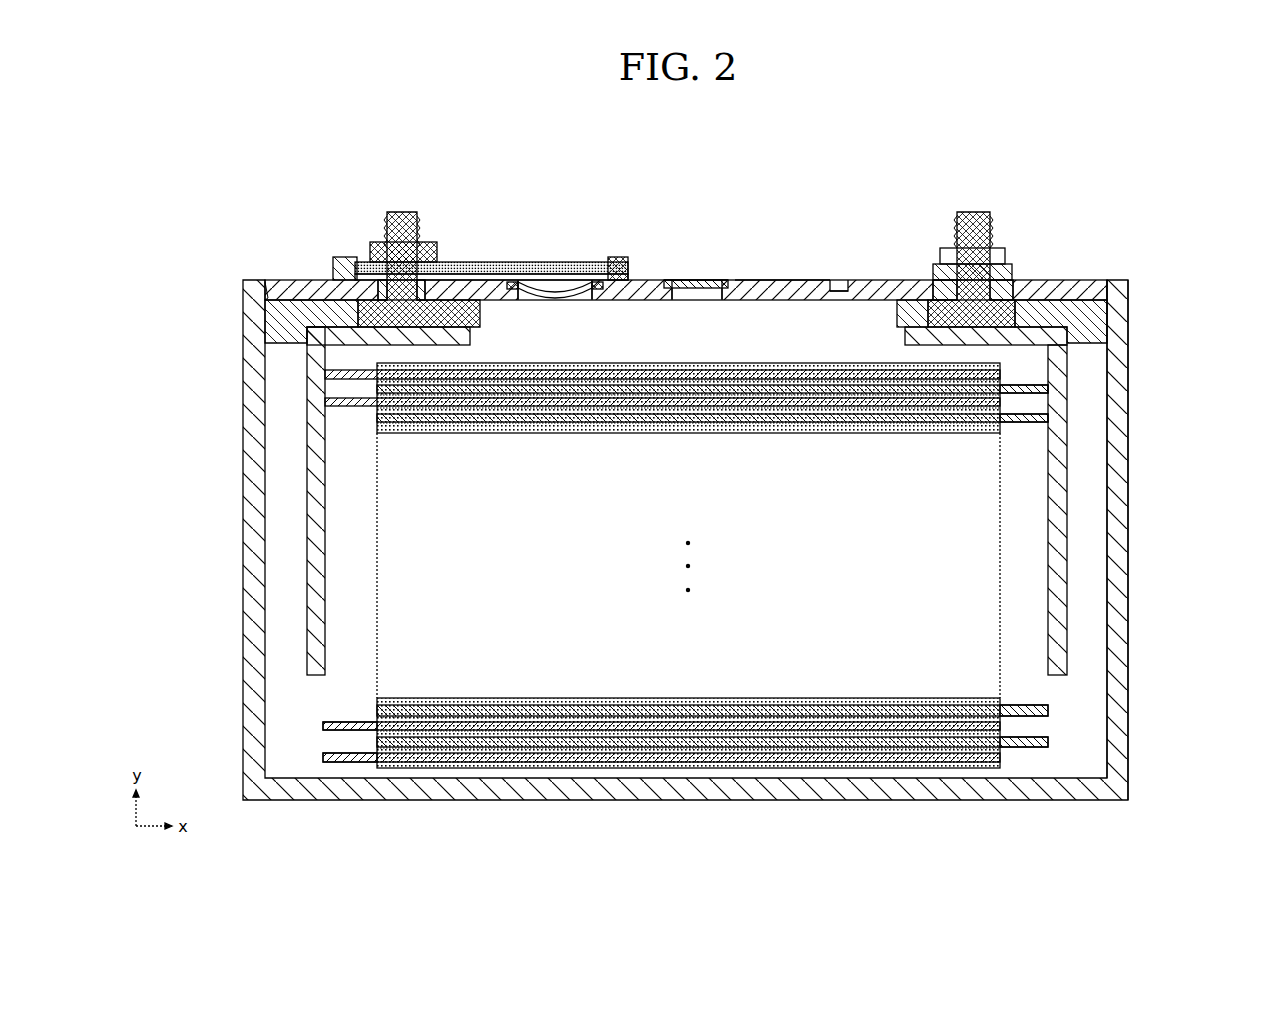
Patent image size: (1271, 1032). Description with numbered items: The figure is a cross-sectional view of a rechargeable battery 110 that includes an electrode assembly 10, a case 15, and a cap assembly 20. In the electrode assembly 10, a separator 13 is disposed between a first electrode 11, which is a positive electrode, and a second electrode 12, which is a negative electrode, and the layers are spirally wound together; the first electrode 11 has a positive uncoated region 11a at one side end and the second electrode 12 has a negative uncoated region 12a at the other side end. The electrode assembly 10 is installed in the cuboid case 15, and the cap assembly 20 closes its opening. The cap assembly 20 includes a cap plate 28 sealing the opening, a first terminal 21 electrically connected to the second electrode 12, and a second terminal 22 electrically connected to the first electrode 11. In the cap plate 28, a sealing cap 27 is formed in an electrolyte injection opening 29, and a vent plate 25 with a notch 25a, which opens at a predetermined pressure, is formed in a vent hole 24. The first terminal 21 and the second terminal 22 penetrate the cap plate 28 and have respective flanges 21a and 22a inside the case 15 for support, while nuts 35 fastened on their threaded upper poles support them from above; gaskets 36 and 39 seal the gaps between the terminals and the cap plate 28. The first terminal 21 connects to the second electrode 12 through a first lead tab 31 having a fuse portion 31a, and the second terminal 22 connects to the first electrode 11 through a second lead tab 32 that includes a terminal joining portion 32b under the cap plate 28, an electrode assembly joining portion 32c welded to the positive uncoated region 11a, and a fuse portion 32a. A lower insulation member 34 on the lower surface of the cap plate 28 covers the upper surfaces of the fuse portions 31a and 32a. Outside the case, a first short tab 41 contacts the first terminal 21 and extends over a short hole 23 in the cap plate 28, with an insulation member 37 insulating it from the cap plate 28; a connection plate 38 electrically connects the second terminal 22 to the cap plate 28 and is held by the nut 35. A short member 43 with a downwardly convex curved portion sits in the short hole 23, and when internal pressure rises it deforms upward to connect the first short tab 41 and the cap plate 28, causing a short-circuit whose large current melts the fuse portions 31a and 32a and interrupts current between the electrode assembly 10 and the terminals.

The rechargeable battery 110 is at (814, 167).
The electrode assembly 10 is at (790, 776).
The case 15 is at (1118, 483).
The lower insulation member 34 is at (262, 326).
The cap assembly 20 is at (651, 279).
The cap plate 28 is at (790, 279).
The sealing cap 27 is at (839, 281).
The electrolyte injection opening 29 is at (839, 293).
The short hole 23 is at (576, 301).
The short member 43 is at (554, 284).
The first short tab 41 is at (501, 263).
The insulation member 37 is at (615, 258).
The vent hole 24 is at (697, 301).
The vent plate 25 is at (722, 279).
The notch 25a is at (697, 279).
The gasket 36 is at (330, 308).
The fuse portion 31a is at (300, 300).
The first terminal 21 is at (402, 212).
The nut 35 is at (430, 244).
The flange 21a is at (478, 324).
The first lead tab 31 is at (306, 493).
The gasket 39 is at (935, 280).
The second terminal 22 is at (973, 212).
The connection plate 38 is at (1020, 268).
The fuse portion 32a is at (1050, 297).
The flange 22a is at (908, 330).
The second lead tab 32 is at (1200, 360).
The terminal joining portion 32b is at (1067, 362).
The electrode assembly joining portion 32c is at (1067, 403).
The separator 13 is at (686, 742).
The second electrode 12 is at (466, 764).
The negative uncoated region 12a is at (336, 764).
The first electrode 11 is at (888, 750).
The positive uncoated region 11a is at (1028, 748).